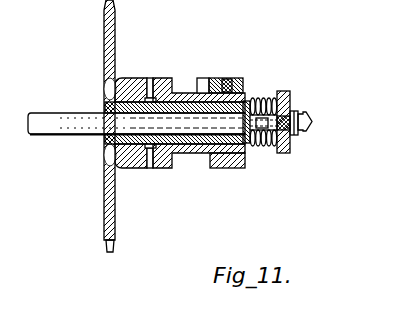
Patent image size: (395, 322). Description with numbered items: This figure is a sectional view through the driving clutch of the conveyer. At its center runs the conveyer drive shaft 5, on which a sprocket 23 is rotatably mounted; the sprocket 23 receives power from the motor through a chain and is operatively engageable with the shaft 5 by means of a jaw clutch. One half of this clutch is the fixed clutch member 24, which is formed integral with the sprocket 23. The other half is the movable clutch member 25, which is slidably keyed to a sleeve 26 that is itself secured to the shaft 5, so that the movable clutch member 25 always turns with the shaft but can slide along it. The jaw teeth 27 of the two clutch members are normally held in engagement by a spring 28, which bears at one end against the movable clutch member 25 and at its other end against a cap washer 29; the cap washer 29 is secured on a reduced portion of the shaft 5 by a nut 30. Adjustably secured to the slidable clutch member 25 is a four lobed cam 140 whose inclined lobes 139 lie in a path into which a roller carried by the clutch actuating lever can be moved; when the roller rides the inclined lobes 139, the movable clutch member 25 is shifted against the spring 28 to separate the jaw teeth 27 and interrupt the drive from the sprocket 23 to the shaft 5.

The conveyer drive shaft 5 is at (42, 113).
The sprocket 23 is at (115, 16).
The fixed clutch member 24 is at (130, 78).
The movable clutch member 25 is at (168, 93).
The sleeve 26 is at (180, 92).
The jaw teeth 27 is at (152, 77).
The spring 28 is at (254, 100).
The cap washer 29 is at (286, 92).
The nut 30 is at (297, 110).
The inclined lobes 139 is at (204, 79).
The four lobed cam 140 is at (235, 80).